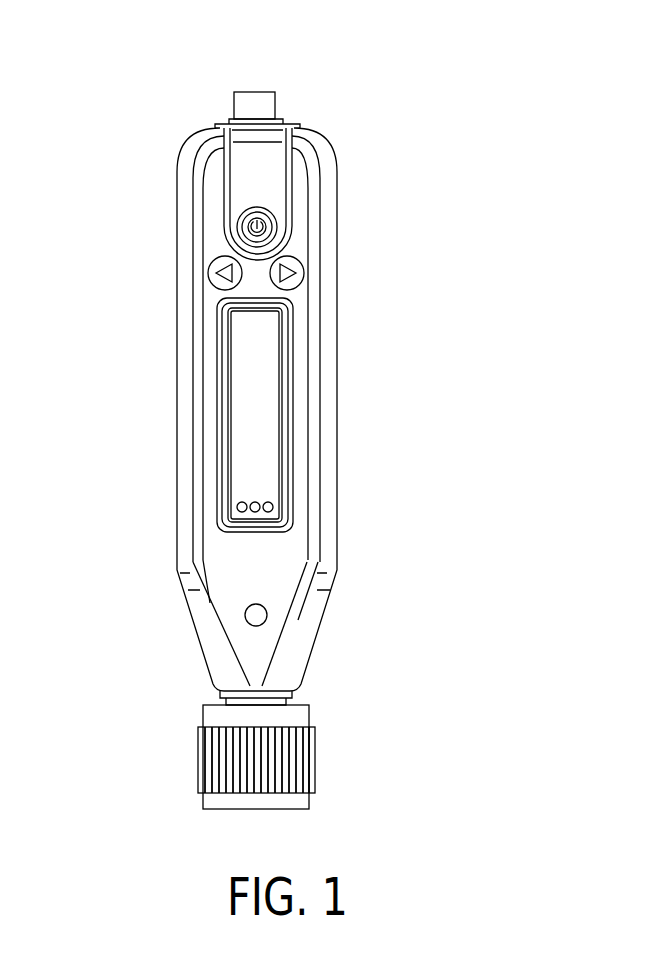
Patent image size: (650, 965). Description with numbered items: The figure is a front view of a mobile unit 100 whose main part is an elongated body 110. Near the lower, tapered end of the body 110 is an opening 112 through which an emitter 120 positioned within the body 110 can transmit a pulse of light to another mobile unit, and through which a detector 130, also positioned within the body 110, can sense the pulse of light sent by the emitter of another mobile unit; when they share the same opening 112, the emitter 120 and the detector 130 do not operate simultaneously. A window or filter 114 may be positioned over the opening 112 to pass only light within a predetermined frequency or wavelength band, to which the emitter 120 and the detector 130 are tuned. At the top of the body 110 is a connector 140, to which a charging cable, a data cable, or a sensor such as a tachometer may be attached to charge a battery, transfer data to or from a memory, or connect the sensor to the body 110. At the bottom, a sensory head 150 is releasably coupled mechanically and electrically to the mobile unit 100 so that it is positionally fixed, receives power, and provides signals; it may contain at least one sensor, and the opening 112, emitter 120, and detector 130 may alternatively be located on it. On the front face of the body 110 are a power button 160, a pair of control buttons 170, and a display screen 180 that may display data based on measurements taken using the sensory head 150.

The mobile unit 100 is at (413, 99).
The body 110 is at (190, 203).
The opening 112 is at (258, 612).
The window or filter 114 is at (382, 587).
The emitter 120 is at (382, 587).
The detector 130 is at (256, 615).
The connector 140 is at (253, 101).
The sensory head 150 is at (250, 758).
The power button 160 is at (259, 226).
The control buttons 170 is at (284, 276).
The display screen 180 is at (257, 382).